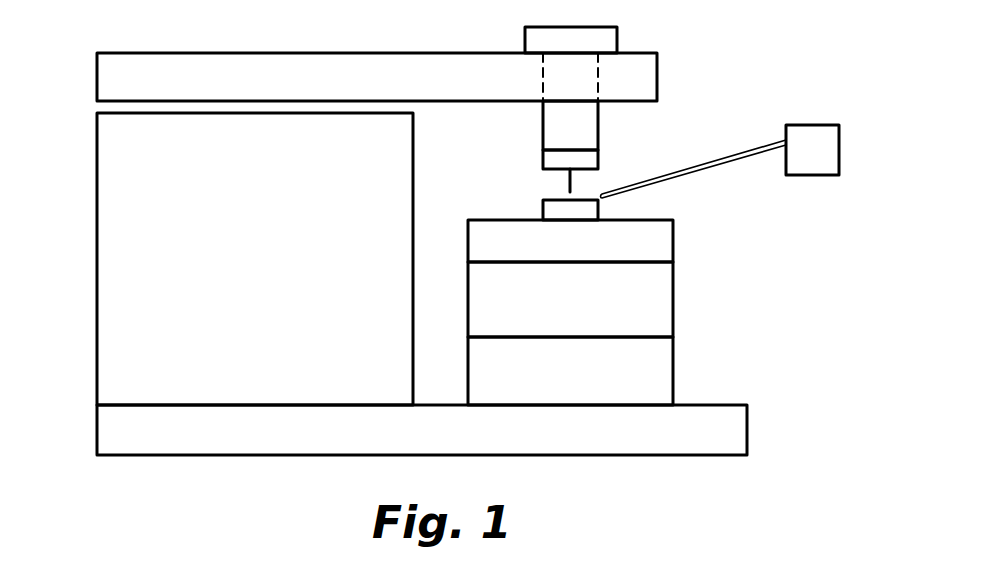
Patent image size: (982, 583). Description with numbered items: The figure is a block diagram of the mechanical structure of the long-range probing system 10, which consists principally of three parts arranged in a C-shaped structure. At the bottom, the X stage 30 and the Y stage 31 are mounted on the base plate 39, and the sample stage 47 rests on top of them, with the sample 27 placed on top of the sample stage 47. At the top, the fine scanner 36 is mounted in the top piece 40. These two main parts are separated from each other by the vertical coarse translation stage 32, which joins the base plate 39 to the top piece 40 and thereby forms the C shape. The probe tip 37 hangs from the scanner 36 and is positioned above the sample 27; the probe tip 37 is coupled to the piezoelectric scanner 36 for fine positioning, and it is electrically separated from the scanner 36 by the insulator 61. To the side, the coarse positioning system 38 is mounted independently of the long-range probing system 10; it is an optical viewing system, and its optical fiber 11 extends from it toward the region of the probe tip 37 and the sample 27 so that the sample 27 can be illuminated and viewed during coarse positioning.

The long-range probing system 10 is at (434, 227).
The optical fiber 11 is at (768, 140).
The sample 27 is at (598, 213).
The X stage 30 is at (673, 363).
The Y stage 31 is at (673, 290).
The vertical coarse translation stage 32 is at (97, 224).
The fine scanner 36 is at (586, 118).
The probe tip 37 is at (600, 163).
The coarse positioning system 38 is at (826, 162).
The base plate 39 is at (747, 424).
The top piece 40 is at (188, 53).
The sample stage 47 is at (673, 237).
The insulator 61 is at (543, 163).